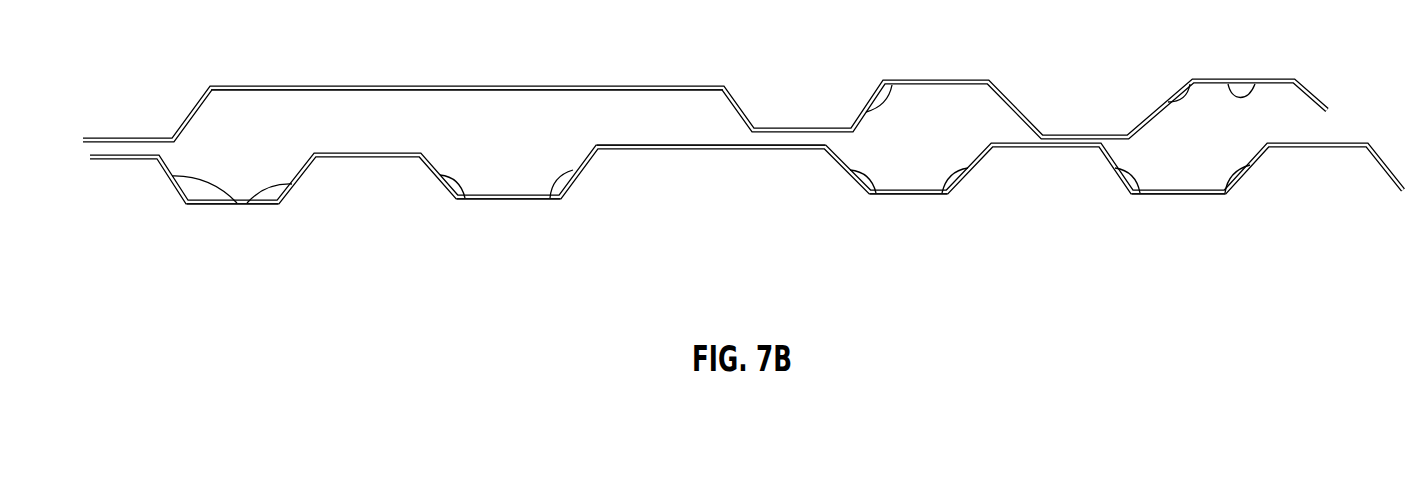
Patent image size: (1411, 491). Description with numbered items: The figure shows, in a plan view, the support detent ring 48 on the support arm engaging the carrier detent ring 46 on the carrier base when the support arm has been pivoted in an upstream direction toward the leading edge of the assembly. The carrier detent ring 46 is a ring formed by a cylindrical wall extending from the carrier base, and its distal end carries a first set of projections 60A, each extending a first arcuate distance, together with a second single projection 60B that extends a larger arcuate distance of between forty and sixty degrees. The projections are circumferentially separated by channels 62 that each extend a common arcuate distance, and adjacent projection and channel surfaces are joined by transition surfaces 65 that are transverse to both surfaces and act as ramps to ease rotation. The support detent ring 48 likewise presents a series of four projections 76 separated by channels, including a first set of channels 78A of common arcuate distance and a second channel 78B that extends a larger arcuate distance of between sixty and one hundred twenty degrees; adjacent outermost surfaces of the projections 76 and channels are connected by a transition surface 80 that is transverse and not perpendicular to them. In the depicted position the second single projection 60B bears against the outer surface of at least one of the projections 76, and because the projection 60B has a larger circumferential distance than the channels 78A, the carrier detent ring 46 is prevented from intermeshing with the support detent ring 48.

The carrier detent ring 46 is at (612, 219).
The support detent ring 48 is at (708, 58).
The first set of projections 60A is at (127, 155).
The second single projection 60B is at (648, 143).
The channels 62 is at (247, 202).
The transition surfaces 65 is at (237, 205).
The projections 76 is at (165, 168).
The first set of channels 78A is at (907, 87).
The second channel 78B is at (397, 92).
The transition surface 80 is at (194, 112).